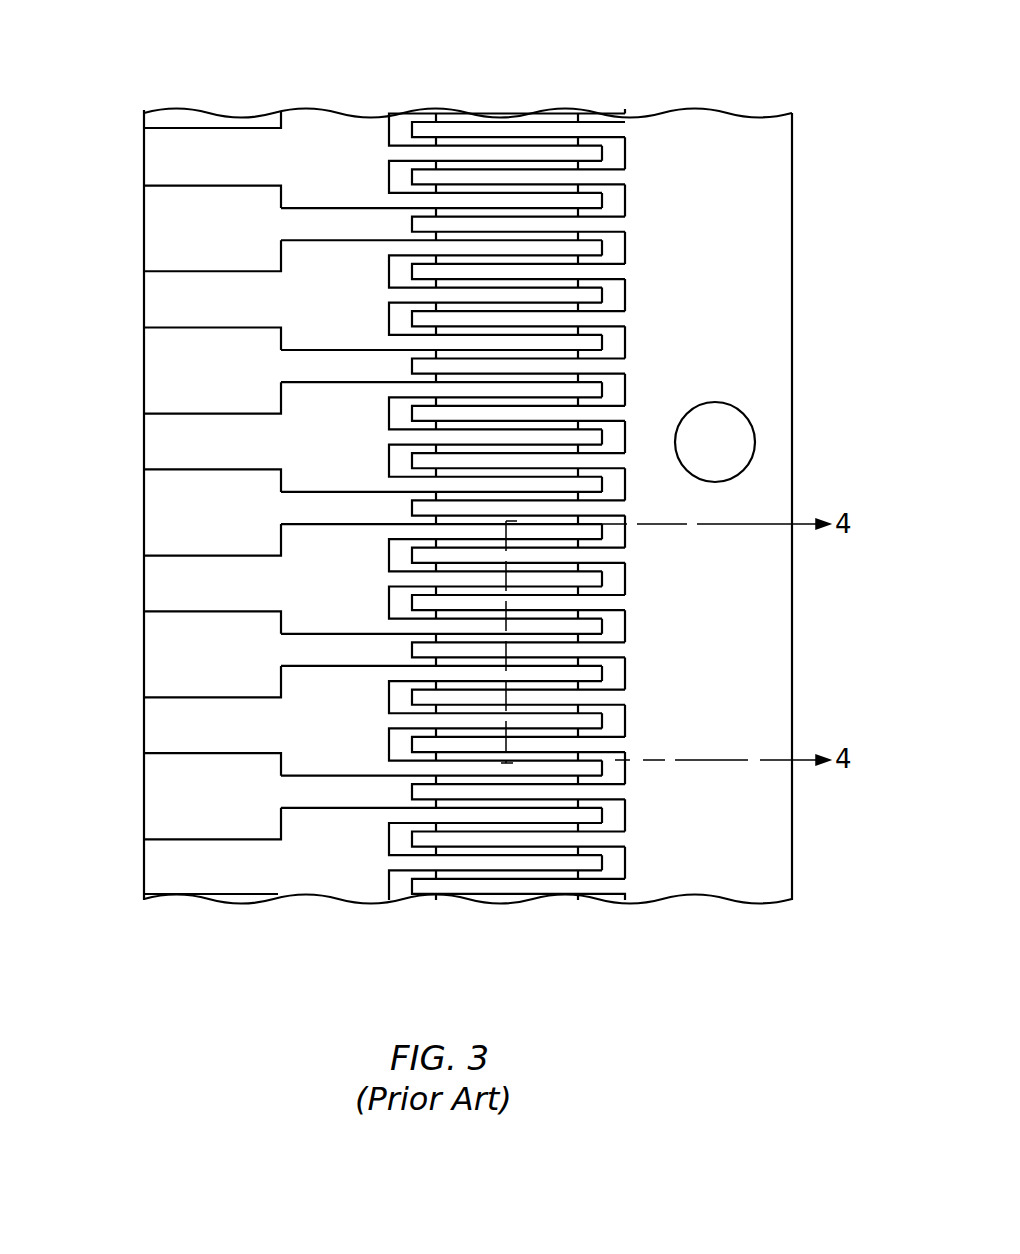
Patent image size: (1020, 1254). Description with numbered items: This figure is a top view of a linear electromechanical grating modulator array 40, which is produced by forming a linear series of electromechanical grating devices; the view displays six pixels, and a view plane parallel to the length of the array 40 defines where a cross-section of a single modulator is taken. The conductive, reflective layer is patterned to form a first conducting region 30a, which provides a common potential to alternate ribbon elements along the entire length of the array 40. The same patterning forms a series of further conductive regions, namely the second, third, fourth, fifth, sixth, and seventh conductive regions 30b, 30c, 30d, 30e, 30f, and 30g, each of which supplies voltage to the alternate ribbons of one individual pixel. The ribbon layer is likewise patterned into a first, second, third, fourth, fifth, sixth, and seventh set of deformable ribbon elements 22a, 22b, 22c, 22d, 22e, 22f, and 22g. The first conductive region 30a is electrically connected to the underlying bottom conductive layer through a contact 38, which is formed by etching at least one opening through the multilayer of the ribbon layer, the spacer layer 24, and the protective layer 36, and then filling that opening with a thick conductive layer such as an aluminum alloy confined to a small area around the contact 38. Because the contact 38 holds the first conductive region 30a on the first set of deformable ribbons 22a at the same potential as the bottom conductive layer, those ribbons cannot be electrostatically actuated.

The first set of deformable ribbon elements 22a is at (553, 648).
The second set of deformable ribbon elements 22b is at (485, 858).
The third set of deformable ribbon elements 22c is at (470, 718).
The fourth set of deformable ribbon elements 22d is at (460, 580).
The fifth set of deformable ribbon elements 22e is at (478, 433).
The sixth set of deformable ribbon elements 22f is at (458, 296).
The seventh set of deformable ribbon elements 22g is at (497, 150).
The spacer layer 24 is at (217, 828).
The first conducting region 30a is at (768, 262).
The second conductive region 30b is at (162, 867).
The third conductive region 30c is at (162, 722).
The fourth conductive region 30d is at (162, 583).
The fifth conductive region 30e is at (160, 442).
The sixth conductive region 30f is at (158, 302).
The seventh conductive region 30g is at (158, 155).
The protective layer 36 is at (508, 905).
The contact 38 is at (750, 422).
The linear electromechanical grating modulator array 40 is at (820, 118).